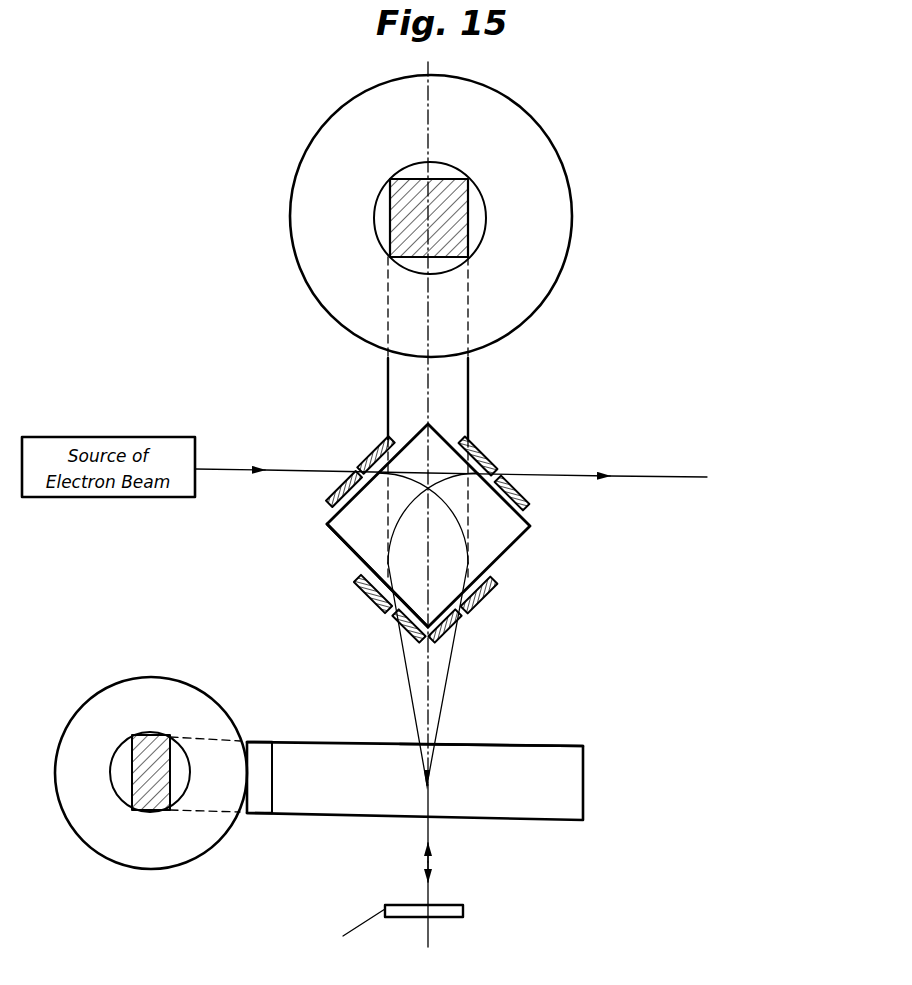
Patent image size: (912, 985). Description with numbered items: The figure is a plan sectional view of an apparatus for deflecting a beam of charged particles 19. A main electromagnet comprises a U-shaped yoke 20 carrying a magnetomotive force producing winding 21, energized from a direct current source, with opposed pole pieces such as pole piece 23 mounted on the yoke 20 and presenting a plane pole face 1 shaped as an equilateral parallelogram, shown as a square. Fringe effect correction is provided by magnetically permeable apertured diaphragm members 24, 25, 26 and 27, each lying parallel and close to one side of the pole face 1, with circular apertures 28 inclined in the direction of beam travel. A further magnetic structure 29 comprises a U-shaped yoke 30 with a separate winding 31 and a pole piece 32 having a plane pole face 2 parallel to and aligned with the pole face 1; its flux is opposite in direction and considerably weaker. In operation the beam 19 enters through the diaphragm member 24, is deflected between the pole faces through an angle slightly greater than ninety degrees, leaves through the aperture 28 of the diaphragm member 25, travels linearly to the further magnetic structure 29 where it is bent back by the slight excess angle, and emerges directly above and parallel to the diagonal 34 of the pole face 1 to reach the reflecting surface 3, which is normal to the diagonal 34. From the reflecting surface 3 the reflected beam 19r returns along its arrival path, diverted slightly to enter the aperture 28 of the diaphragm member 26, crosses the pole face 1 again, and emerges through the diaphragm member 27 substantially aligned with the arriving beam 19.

The pole face 1 is at (500, 540).
The pole face 2 is at (575, 781).
The reflecting surface 3 is at (440, 910).
The beam of charged particles 19 is at (230, 469).
The reflected beam 19r is at (636, 477).
The U-shaped yoke 20 is at (453, 381).
The magnetomotive force producing winding 21 is at (345, 295).
The pole piece 23 is at (342, 538).
The apertured diaphragm member 24 is at (329, 497).
The apertured diaphragm member 25 is at (490, 600).
The apertured diaphragm member 26 is at (365, 597).
The apertured diaphragm member 27 is at (487, 453).
The aperture 28 is at (357, 469).
The further magnetic structure 29 is at (254, 830).
The U-shaped yoke 30 is at (250, 741).
The magnetomotive force producing winding 31 is at (167, 708).
The pole piece 32 is at (548, 744).
The diagonal 34 is at (427, 687).